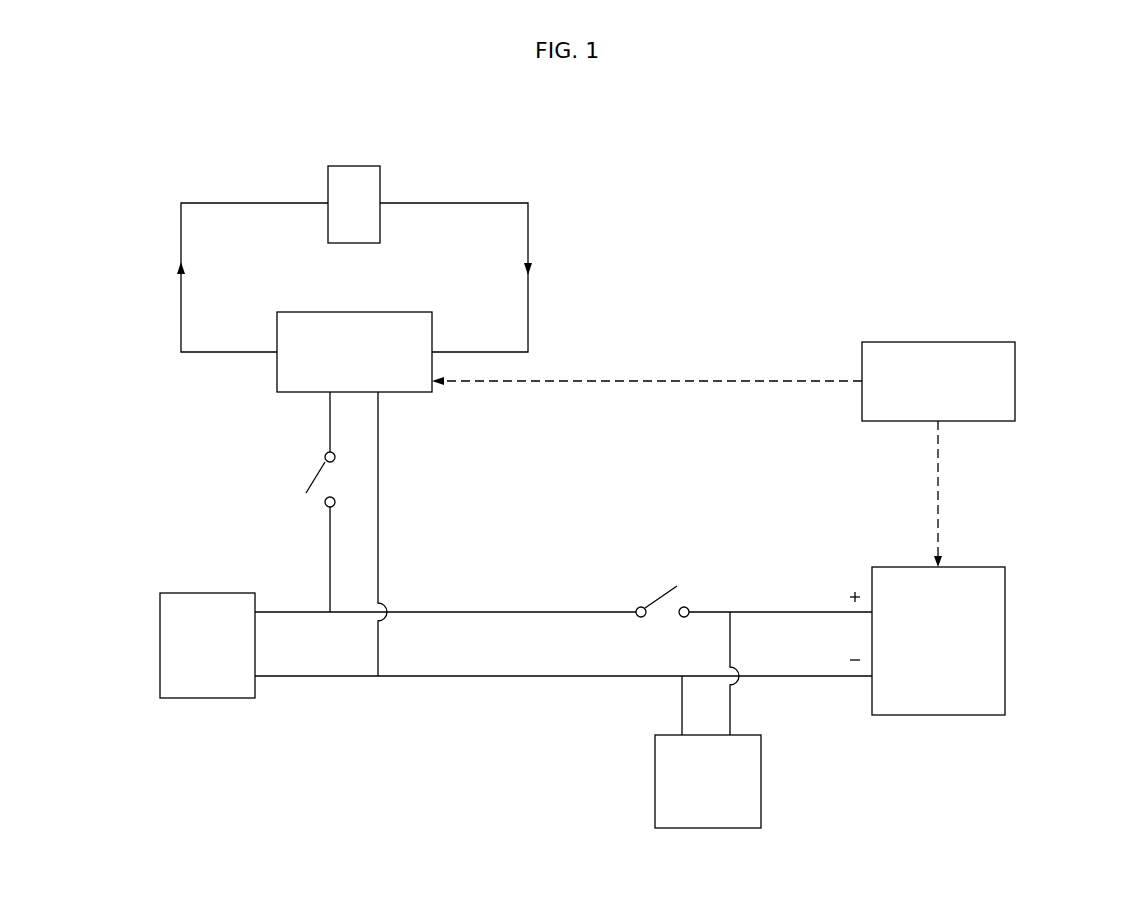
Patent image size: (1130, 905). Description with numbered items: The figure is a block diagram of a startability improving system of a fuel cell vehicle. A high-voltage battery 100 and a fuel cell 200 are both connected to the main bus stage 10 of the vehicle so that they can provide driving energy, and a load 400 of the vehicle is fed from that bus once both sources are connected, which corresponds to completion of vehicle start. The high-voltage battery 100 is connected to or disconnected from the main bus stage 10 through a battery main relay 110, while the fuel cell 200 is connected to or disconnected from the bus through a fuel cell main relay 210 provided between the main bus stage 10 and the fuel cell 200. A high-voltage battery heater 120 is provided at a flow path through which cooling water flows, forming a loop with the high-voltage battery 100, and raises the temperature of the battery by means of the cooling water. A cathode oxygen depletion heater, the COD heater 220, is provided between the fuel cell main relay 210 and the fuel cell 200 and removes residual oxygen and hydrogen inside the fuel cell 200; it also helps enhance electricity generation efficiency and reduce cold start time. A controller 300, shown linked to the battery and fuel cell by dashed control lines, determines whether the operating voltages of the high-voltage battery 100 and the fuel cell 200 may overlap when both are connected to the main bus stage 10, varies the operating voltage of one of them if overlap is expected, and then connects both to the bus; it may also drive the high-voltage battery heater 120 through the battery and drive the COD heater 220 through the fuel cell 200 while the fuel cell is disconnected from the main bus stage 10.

The main bus stage 10 is at (543, 612).
The high-voltage battery 100 is at (277, 383).
The battery main relay 110 is at (288, 477).
The high-voltage battery heater 120 is at (353, 166).
The fuel cell 200 is at (1005, 640).
The fuel cell main relay 210 is at (661, 571).
The cathode oxygen depletion (COD) heater 220 is at (761, 780).
The controller 300 is at (1015, 378).
The load 400 is at (207, 698).